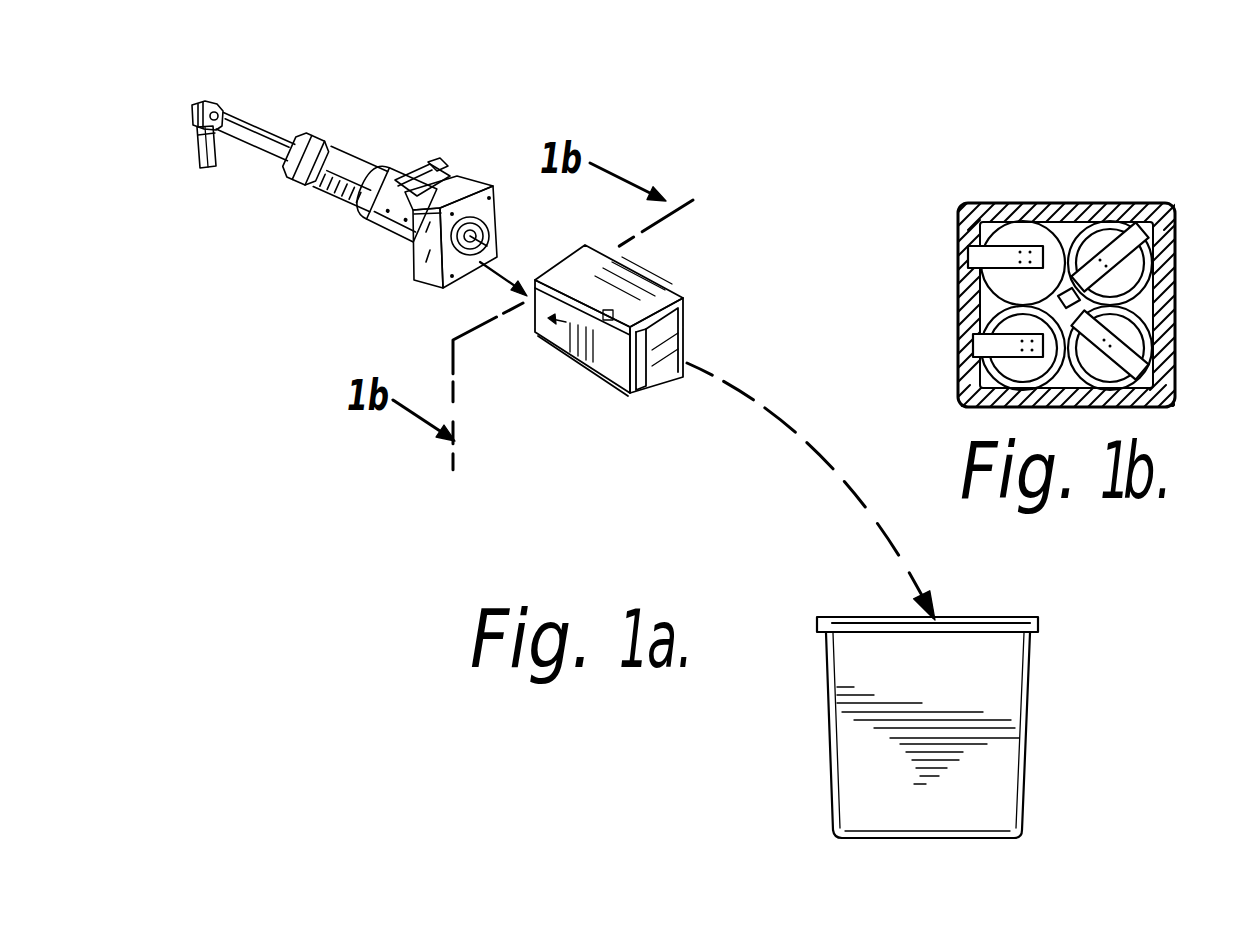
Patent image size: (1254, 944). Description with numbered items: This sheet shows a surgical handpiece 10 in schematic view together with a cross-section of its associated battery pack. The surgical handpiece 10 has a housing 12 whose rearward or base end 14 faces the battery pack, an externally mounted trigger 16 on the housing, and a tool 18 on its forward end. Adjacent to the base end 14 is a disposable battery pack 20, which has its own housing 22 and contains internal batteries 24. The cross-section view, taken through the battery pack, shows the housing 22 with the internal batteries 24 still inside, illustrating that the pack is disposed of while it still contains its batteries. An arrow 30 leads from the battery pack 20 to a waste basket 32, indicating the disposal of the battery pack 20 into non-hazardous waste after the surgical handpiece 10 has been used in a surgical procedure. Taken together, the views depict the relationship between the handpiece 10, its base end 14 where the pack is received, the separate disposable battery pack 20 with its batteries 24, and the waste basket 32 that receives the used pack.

In FIG. 1A, the surgical handpiece 10 is at (388, 120).
In FIG. 1A, the housing 12 is at (343, 207).
In FIG. 1A, the rearward or base end 14 is at (421, 276).
In FIG. 1A, the trigger 16 is at (446, 168).
In FIG. 1A, the tool 18 is at (207, 169).
In FIG. 1A, the disposable battery pack 20 is at (685, 270).
In FIG. 1A, the housing 22 is at (600, 362).
In FIG. 1B, the housing 22 is at (1026, 204).
In FIG. 1B, the internal batteries 24 is at (1098, 206).
In FIG. 1A, the arrow 30 is at (850, 497).
In FIG. 1A, the waste basket 32 is at (1032, 690).